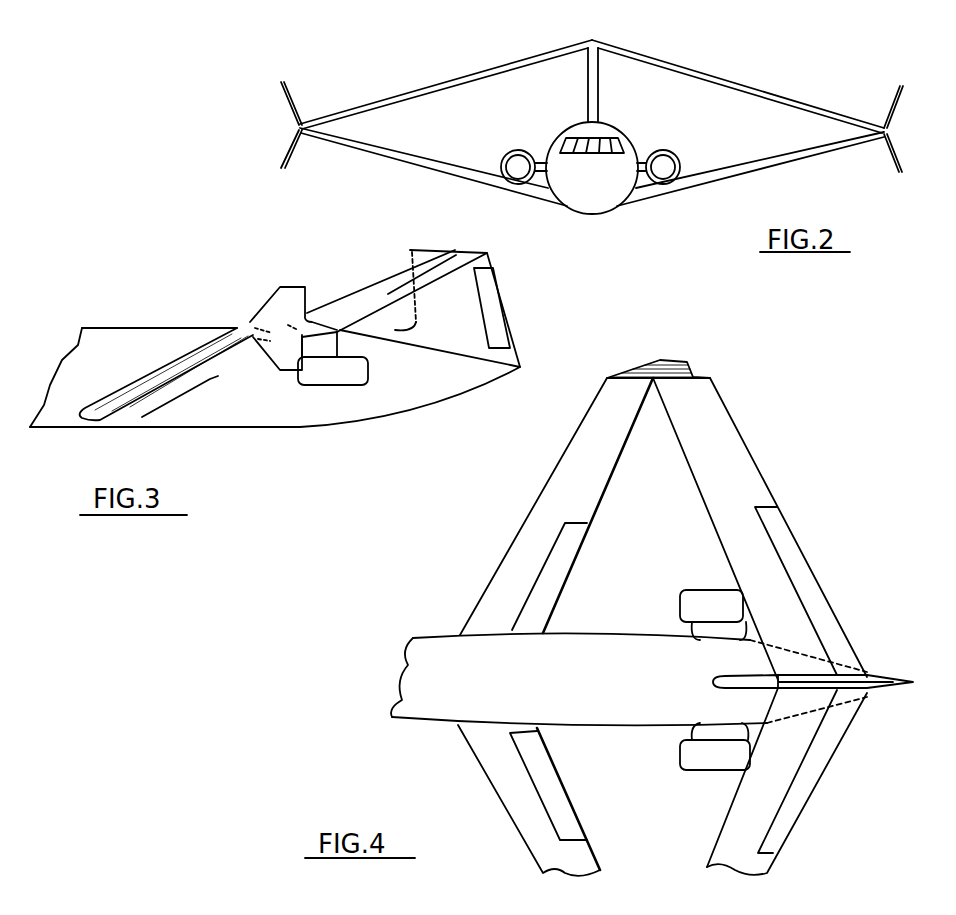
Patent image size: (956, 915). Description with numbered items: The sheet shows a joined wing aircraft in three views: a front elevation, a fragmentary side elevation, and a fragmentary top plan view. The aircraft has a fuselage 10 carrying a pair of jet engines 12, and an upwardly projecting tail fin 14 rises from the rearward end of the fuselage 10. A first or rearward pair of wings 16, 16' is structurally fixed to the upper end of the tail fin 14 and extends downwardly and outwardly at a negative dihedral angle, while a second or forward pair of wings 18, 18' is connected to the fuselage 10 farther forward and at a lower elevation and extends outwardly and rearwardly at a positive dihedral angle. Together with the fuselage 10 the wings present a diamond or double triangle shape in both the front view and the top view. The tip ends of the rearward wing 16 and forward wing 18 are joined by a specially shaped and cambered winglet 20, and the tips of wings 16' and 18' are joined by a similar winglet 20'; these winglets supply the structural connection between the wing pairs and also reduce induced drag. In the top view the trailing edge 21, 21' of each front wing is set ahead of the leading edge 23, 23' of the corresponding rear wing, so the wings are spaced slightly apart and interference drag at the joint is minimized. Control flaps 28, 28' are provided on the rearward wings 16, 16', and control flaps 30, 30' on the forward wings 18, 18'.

In FIG. 2, the fuselage 10 is at (557, 135).
In FIG. 3, the fuselage 10 is at (254, 413).
In FIG. 4, the fuselage 10 is at (425, 680).
In FIG. 2, the jet engines 12 is at (672, 150).
In FIG. 3, the jet engines 12 is at (358, 374).
In FIG. 4, the jet engines 12 is at (703, 590).
In FIG. 2, the tail fin 14 is at (597, 79).
In FIG. 3, the tail fin 14 is at (467, 298).
In FIG. 4, the tail fin 14 is at (877, 677).
In FIG. 2, the rearward wing 16 is at (738, 81).
In FIG. 3, the rearward wing 16 is at (397, 285).
In FIG. 4, the rearward wing 16 is at (768, 784).
In FIG. 2, the rearward wing 16' is at (446, 77).
In FIG. 4, the rearward wing 16' is at (788, 527).
In FIG. 2, the forward wing 18 is at (750, 174).
In FIG. 3, the forward wing 18 is at (166, 374).
In FIG. 4, the forward wing 18 is at (529, 800).
In FIG. 2, the forward wing 18' is at (433, 167).
In FIG. 4, the forward wing 18' is at (533, 506).
In FIG. 2, the winglet 20 is at (878, 105).
In FIG. 3, the winglet 20 is at (281, 302).
In FIG. 2, the winglet 20' is at (254, 111).
In FIG. 4, the winglet 20' is at (677, 345).
In FIG. 4, the trailing edge 21 is at (574, 799).
In FIG. 4, the trailing edge 21' is at (598, 505).
In FIG. 4, the leading edge 23 is at (715, 529).
In FIG. 4, the leading edge 23' is at (722, 777).
In FIG. 4, the control flap 28 is at (812, 771).
In FIG. 4, the control flap 28' is at (799, 591).
In FIG. 4, the control flap 30 is at (562, 785).
In FIG. 4, the control flap 30' is at (564, 576).